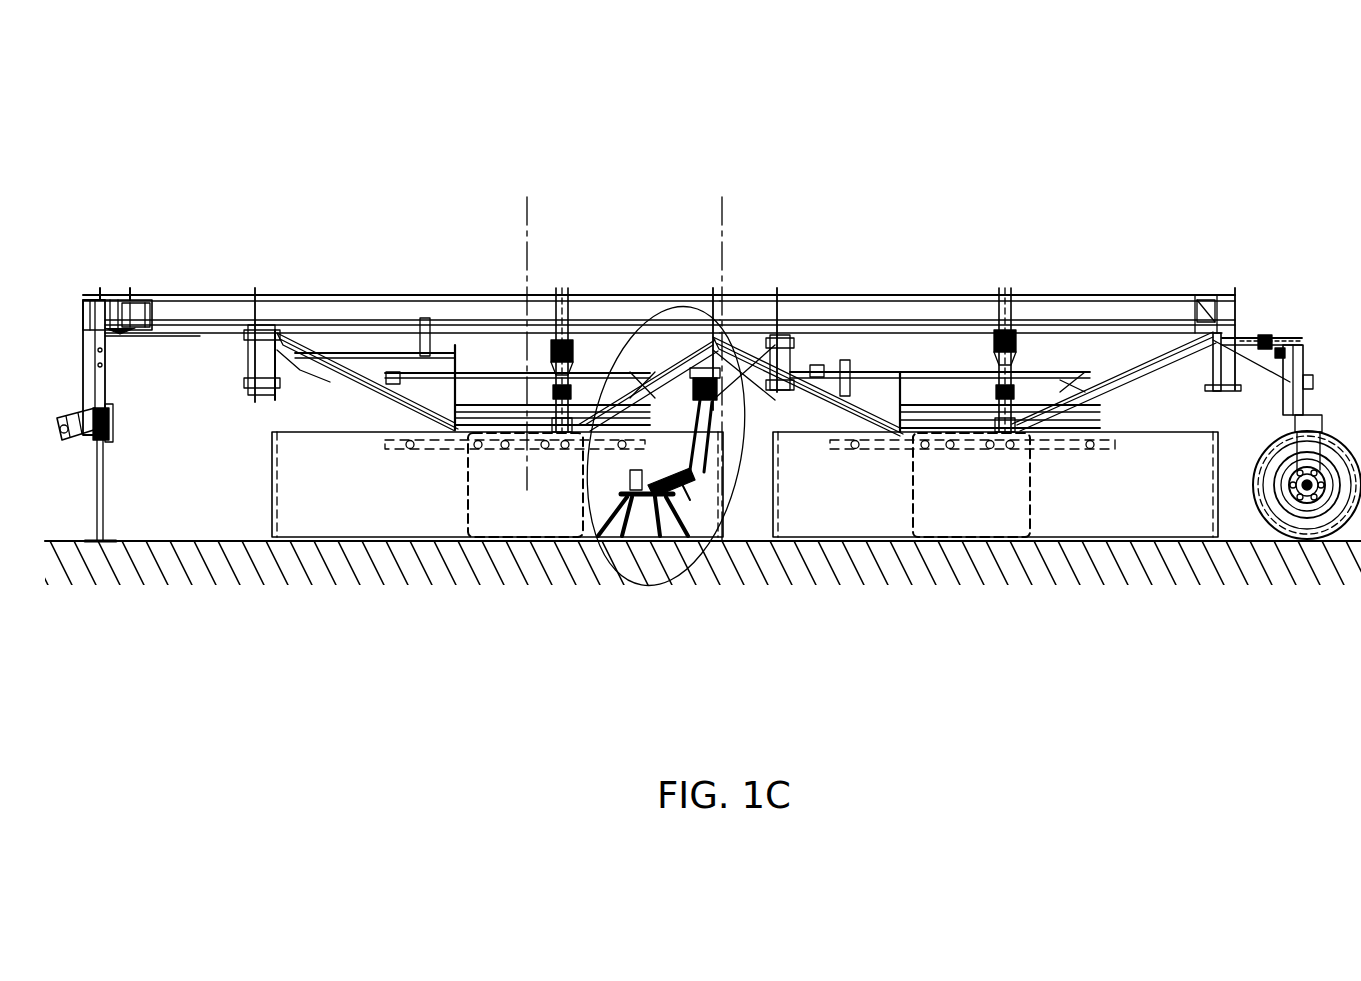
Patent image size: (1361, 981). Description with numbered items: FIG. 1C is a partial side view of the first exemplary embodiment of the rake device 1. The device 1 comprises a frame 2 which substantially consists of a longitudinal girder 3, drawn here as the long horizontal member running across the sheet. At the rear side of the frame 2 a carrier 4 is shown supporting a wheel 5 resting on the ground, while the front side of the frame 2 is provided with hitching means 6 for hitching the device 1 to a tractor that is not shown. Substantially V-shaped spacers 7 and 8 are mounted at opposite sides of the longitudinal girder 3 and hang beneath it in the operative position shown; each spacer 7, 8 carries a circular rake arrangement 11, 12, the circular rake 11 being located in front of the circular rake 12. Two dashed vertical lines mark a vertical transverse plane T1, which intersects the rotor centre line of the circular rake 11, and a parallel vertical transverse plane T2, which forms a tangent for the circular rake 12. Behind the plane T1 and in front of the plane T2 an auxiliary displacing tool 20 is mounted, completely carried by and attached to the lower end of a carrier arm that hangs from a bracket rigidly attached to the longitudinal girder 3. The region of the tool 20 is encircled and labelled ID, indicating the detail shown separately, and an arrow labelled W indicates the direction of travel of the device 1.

The rake device 1 is at (235, 229).
The frame 2 is at (220, 307).
The longitudinal girder 3 is at (1047, 308).
The carriers 4 is at (1290, 337).
The wheels 5 is at (1337, 458).
The hitching means 6 is at (75, 420).
The spacer 7 is at (342, 367).
The spacer 8 is at (860, 387).
The circular rake arrangement 11 is at (303, 478).
The circular rake arrangement 12 is at (1162, 467).
The auxiliary displacing tool 20 is at (665, 419).
The travel direction W is at (395, 150).
The vertical transverse plane T1 is at (527, 225).
The vertical transverse plane T2 is at (722, 225).
The detail indicator ID is at (725, 478).